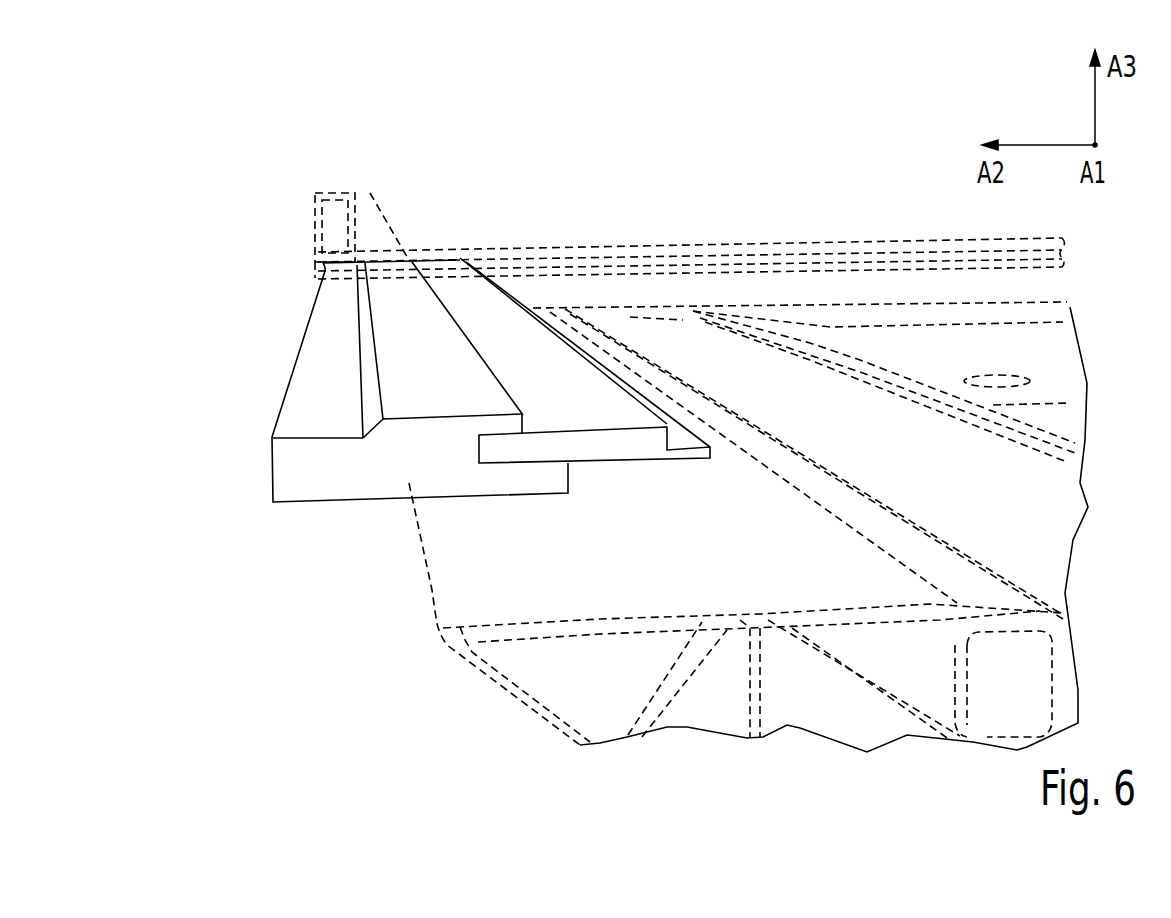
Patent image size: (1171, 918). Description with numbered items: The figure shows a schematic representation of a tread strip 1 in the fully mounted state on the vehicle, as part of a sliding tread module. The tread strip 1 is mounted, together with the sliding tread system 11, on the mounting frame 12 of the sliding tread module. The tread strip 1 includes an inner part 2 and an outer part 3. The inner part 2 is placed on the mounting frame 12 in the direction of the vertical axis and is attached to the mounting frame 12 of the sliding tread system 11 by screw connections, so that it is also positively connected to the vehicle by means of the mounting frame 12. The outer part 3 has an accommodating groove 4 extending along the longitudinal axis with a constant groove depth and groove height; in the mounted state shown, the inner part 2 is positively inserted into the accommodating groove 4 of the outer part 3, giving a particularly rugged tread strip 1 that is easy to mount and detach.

The tread strip 1 is at (255, 582).
The inner part 2 is at (442, 262).
The outer part 3 is at (305, 367).
The accommodating groove 4 is at (475, 449).
The sliding tread system 11 is at (692, 318).
The mounting frame 12 is at (534, 262).